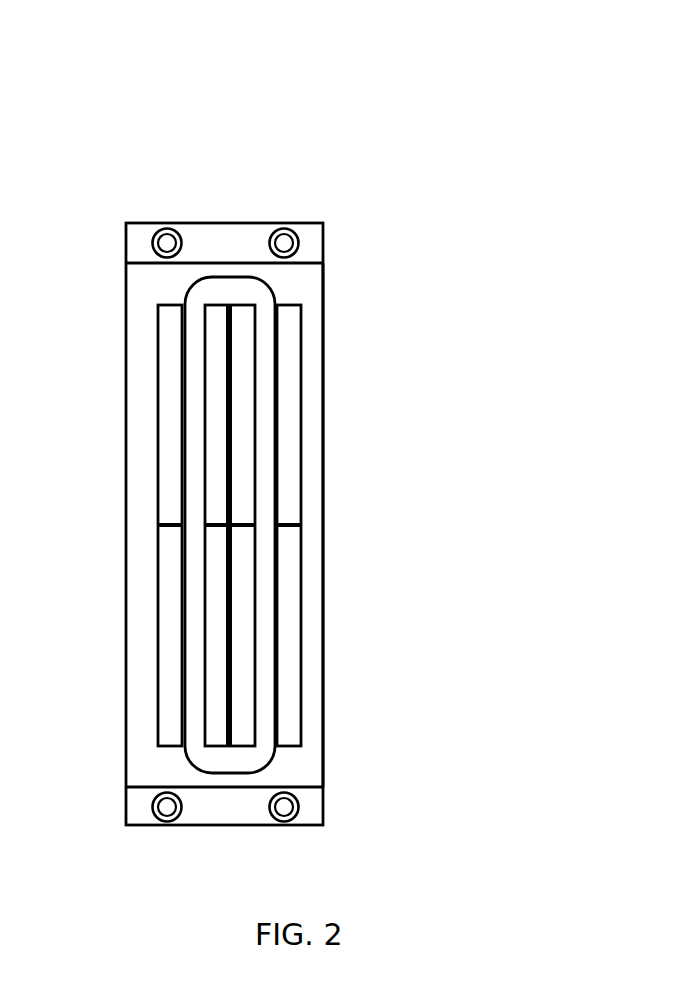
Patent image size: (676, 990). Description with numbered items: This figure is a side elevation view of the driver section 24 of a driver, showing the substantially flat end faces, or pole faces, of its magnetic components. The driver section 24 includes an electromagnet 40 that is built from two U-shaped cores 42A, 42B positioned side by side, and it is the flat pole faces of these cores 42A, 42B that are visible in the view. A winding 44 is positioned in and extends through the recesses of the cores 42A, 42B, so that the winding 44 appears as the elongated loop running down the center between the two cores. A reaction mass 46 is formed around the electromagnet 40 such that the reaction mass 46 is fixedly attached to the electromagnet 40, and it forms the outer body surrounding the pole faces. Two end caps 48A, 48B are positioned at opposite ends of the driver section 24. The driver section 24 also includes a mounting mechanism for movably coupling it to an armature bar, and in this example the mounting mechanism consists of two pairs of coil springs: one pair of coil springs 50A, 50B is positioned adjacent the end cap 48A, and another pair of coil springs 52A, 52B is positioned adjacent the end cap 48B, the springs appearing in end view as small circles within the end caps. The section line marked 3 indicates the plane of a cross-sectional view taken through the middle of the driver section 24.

The driver section 24 is at (280, 124).
The electromagnet 40 is at (305, 295).
The U-shaped core 42A is at (301, 435).
The U-shaped core 42B is at (158, 425).
The winding 44 is at (228, 277).
The reaction mass 46 is at (323, 333).
The end cap 48A is at (323, 242).
The end cap 48B is at (323, 805).
The coil spring 50A is at (167, 228).
The coil spring 50B is at (284, 228).
The coil spring 52A is at (167, 825).
The coil spring 52B is at (284, 825).
The section line 3- 3 is at (63, 570).